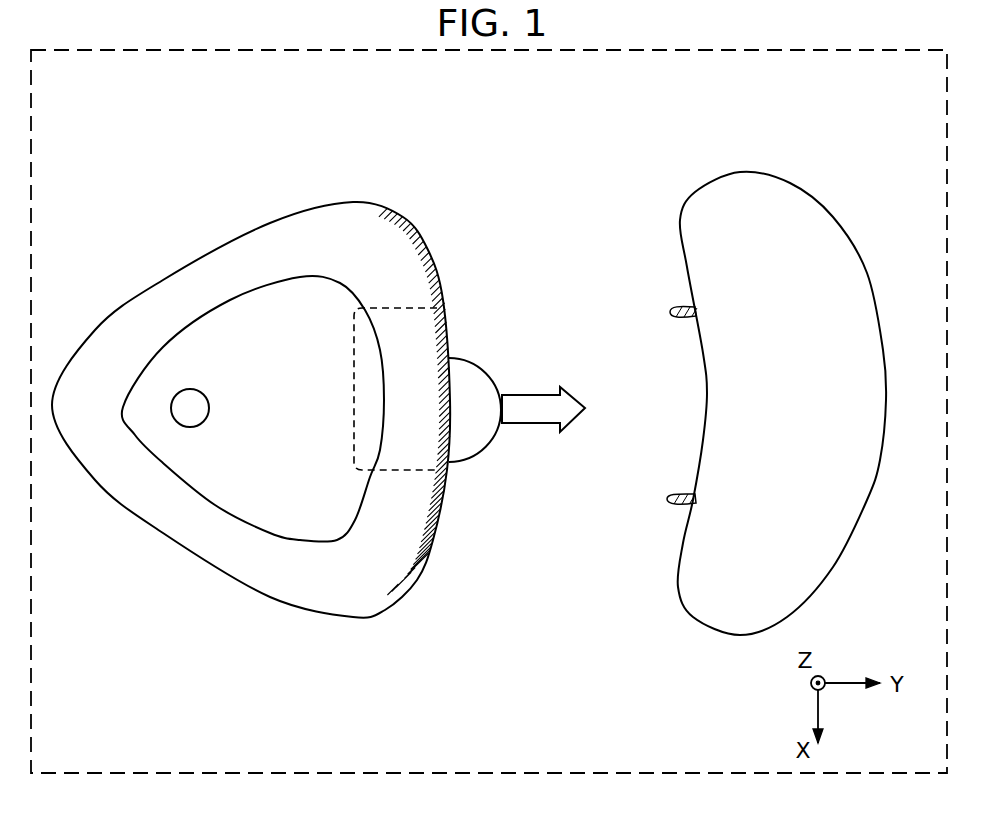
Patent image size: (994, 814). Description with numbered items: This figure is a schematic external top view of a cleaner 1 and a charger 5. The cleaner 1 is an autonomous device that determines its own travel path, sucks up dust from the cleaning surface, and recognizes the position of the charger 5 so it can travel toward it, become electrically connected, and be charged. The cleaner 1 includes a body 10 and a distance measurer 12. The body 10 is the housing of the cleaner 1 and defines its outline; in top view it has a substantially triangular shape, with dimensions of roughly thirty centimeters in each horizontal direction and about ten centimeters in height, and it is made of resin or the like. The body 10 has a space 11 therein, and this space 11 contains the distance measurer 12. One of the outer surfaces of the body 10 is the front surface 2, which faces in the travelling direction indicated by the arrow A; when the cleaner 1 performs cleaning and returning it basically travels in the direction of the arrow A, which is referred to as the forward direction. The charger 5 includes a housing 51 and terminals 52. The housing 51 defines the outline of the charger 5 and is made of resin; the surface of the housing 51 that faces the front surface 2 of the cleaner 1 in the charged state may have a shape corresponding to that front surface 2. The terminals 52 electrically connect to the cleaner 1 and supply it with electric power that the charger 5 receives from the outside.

The cleaner 1 is at (372, 152).
The body 10 is at (193, 282).
The space 11 is at (415, 470).
The distance measurer 12 is at (473, 390).
The front surface 2 is at (423, 245).
The charger 5 is at (855, 147).
The housing 51 is at (767, 172).
The terminals 52 is at (680, 494).
The arrow A is at (543, 395).